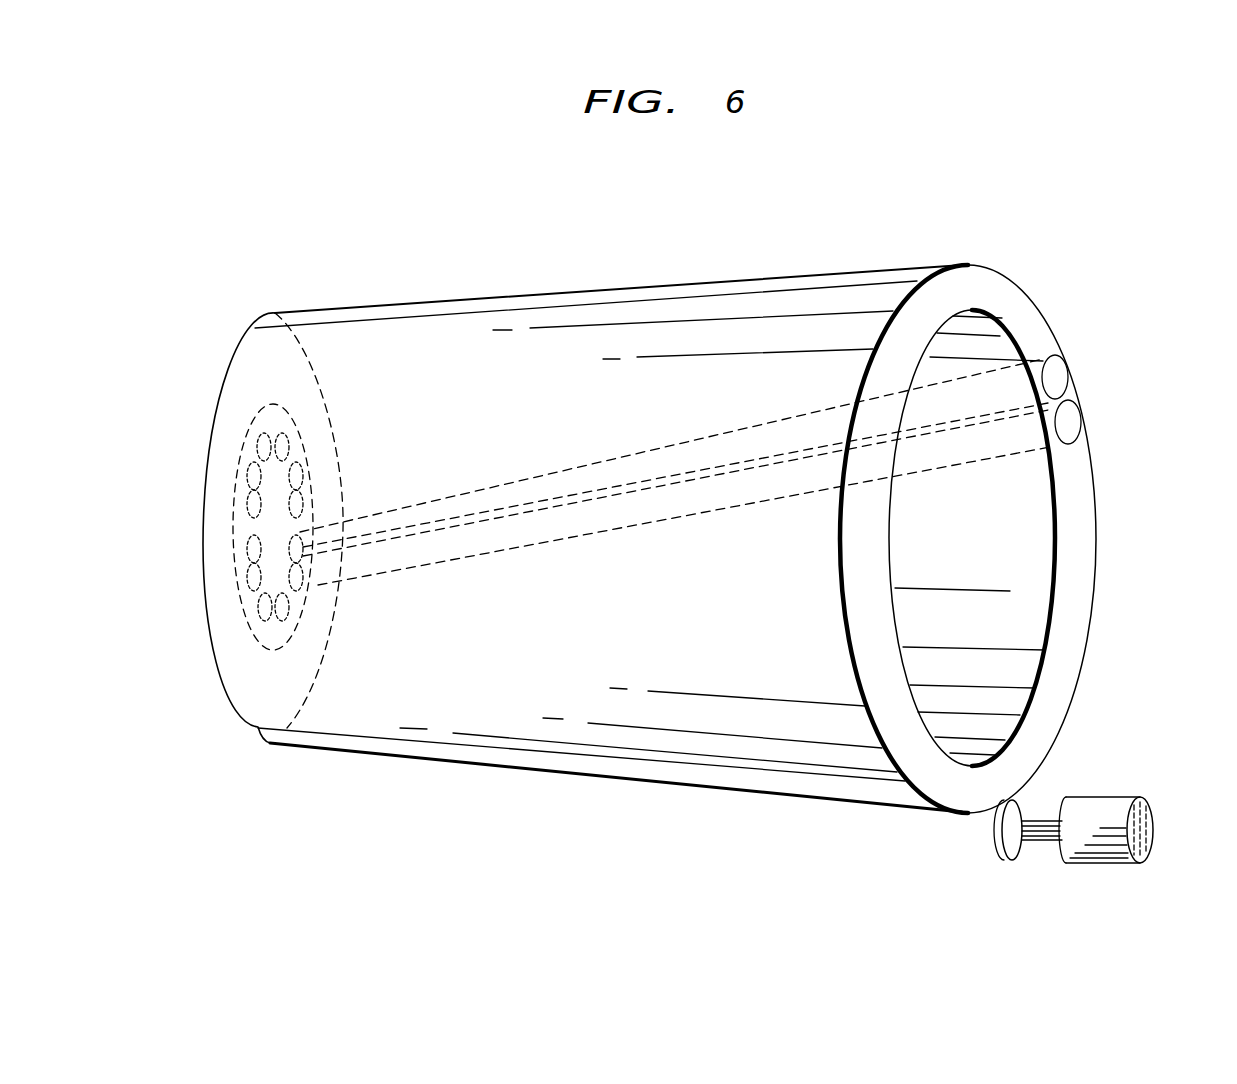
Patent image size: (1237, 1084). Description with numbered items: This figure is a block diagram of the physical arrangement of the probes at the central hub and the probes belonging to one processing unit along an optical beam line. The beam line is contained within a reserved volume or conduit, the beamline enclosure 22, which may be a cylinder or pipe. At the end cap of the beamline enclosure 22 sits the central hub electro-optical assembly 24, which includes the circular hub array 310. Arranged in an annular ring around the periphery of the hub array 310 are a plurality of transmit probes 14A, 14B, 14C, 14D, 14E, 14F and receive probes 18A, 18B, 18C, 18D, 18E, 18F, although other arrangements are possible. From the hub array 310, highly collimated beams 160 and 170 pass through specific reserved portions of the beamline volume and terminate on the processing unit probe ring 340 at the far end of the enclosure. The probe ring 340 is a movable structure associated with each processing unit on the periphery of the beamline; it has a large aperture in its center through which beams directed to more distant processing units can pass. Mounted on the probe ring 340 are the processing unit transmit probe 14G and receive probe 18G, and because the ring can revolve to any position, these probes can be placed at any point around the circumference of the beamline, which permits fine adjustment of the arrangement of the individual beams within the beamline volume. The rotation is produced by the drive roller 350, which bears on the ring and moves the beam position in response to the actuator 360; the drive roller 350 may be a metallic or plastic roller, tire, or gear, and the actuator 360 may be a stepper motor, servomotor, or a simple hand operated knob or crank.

The transmit probe 14A is at (285, 430).
The transmit probe 14B is at (307, 467).
The transmit probe 14C is at (303, 548).
The transmit probe 14D is at (287, 630).
The transmit probe 14E is at (247, 578).
The transmit probe 14F is at (245, 502).
The processing unit transmit probe 14G is at (1085, 436).
The receive probe 18A is at (255, 427).
The receive probe 18B is at (302, 502).
The receive probe 18C is at (303, 578).
The receive probe 18D is at (257, 630).
The receive probe 18E is at (247, 550).
The receive probe 18F is at (247, 463).
The processing unit receive probe 18G is at (1068, 358).
The beamline enclosure 22 is at (683, 783).
The central hub electro-optical assembly 24 is at (233, 708).
The collimated beam 160 is at (663, 515).
The collimated beam 170 is at (662, 443).
The hub array 310 is at (277, 530).
The processing unit probe ring 340 is at (1097, 603).
The drive roller 350 is at (1012, 855).
The actuator 360 is at (1153, 830).